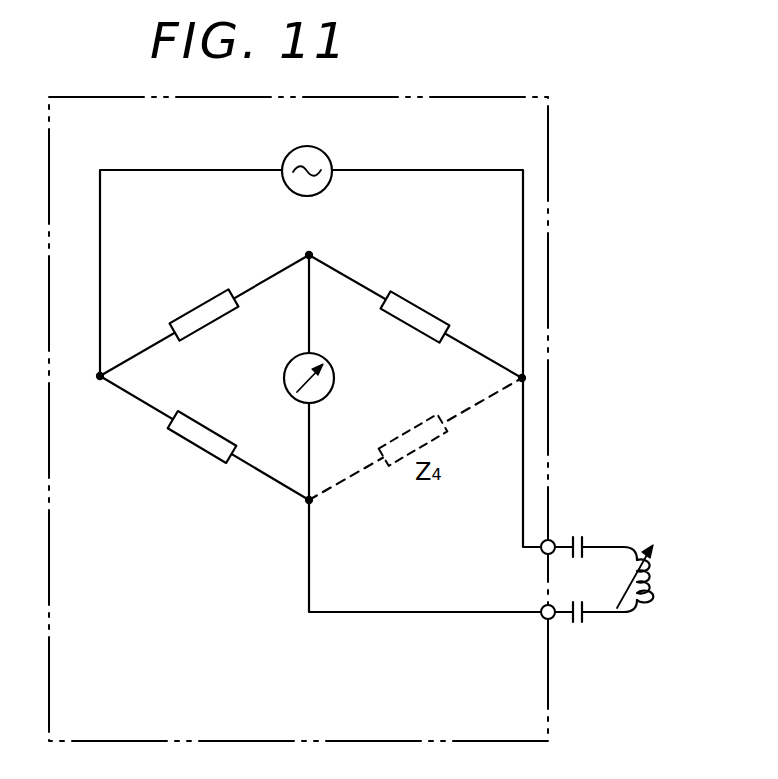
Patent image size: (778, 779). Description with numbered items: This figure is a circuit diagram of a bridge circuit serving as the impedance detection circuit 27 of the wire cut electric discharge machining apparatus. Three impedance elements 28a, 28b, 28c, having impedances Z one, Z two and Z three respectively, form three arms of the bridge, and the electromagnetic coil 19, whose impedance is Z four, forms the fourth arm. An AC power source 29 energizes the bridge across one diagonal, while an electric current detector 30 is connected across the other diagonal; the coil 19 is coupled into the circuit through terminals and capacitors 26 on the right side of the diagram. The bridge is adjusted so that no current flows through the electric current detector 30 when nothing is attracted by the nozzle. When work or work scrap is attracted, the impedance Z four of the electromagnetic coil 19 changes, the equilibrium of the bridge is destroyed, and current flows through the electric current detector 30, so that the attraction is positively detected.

The impedance detection circuit 27 is at (548, 147).
The AC power source 29 is at (312, 148).
The impedance element 28a is at (212, 327).
The impedance element 28b is at (220, 428).
The impedance element 28c is at (406, 330).
The electric current detector 30 is at (327, 356).
The coupling capacitors / terminals 26 is at (583, 536).
The electromagnetic coil 19 is at (650, 578).